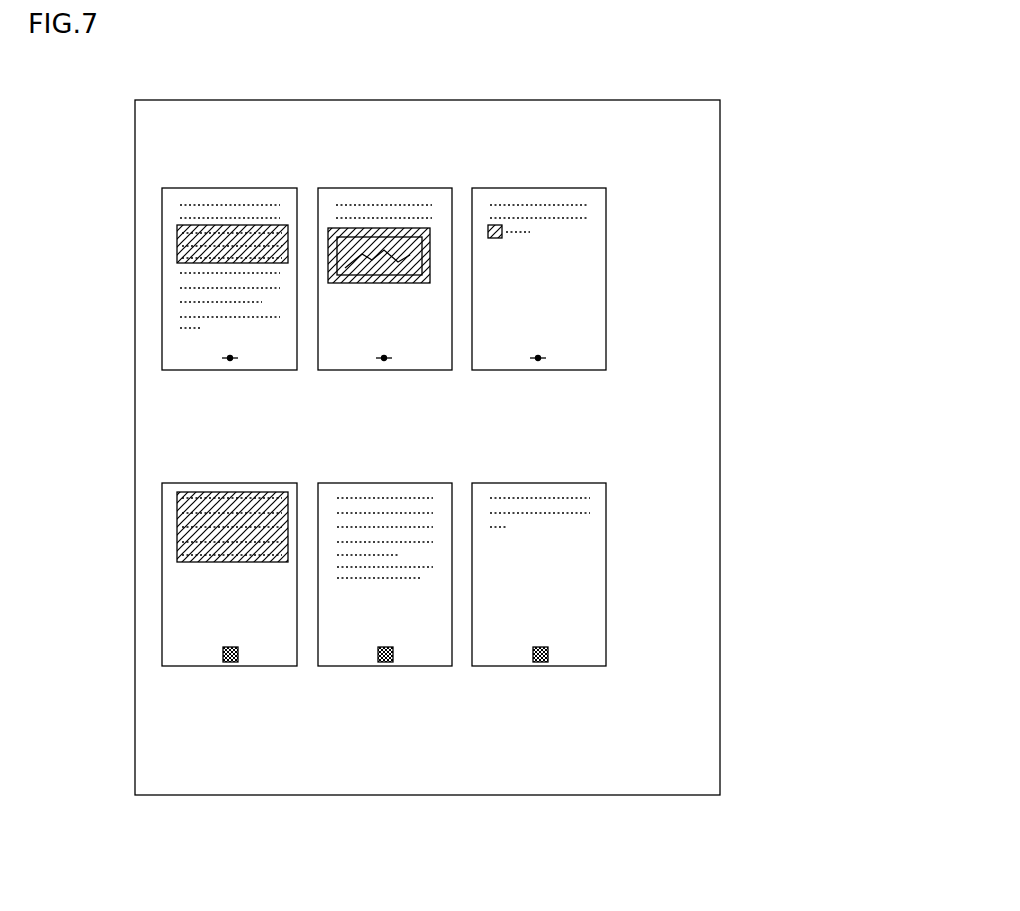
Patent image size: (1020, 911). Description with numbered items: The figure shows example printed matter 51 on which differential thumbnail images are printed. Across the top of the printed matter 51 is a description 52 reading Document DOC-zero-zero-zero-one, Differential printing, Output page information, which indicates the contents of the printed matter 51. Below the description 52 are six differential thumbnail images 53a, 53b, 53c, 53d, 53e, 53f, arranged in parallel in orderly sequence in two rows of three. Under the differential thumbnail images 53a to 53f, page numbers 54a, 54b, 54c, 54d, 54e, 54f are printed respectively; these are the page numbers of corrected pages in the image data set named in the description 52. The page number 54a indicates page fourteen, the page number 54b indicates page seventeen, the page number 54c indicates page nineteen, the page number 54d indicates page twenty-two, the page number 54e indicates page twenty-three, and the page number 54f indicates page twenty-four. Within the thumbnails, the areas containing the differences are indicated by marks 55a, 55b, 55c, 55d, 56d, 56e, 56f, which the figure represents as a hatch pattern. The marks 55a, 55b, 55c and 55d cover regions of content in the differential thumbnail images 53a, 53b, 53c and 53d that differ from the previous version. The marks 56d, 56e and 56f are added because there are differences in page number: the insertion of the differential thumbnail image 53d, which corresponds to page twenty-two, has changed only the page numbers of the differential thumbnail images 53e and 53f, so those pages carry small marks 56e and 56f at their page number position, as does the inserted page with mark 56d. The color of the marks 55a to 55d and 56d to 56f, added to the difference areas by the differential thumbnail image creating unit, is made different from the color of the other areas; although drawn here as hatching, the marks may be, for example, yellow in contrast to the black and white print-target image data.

The printed matter 51 is at (712, 97).
The description 52 is at (155, 107).
The differential thumbnail image 53a is at (162, 205).
The differential thumbnail image 53b is at (452, 190).
The differential thumbnail image 53c is at (606, 200).
The differential thumbnail image 53d is at (162, 505).
The differential thumbnail image 53e is at (452, 483).
The differential thumbnail image 53f is at (606, 513).
The page number 54a is at (188, 408).
The page number 54b is at (355, 409).
The page number 54c is at (588, 404).
The page number 54d is at (197, 708).
The page number 54e is at (363, 709).
The page number 54f is at (510, 709).
The mark 55a is at (177, 243).
The mark 55b is at (330, 285).
The mark 55c is at (500, 238).
The mark 55d is at (177, 530).
The mark 56d is at (223, 656).
The mark 56e is at (378, 662).
The mark 56f is at (540, 647).